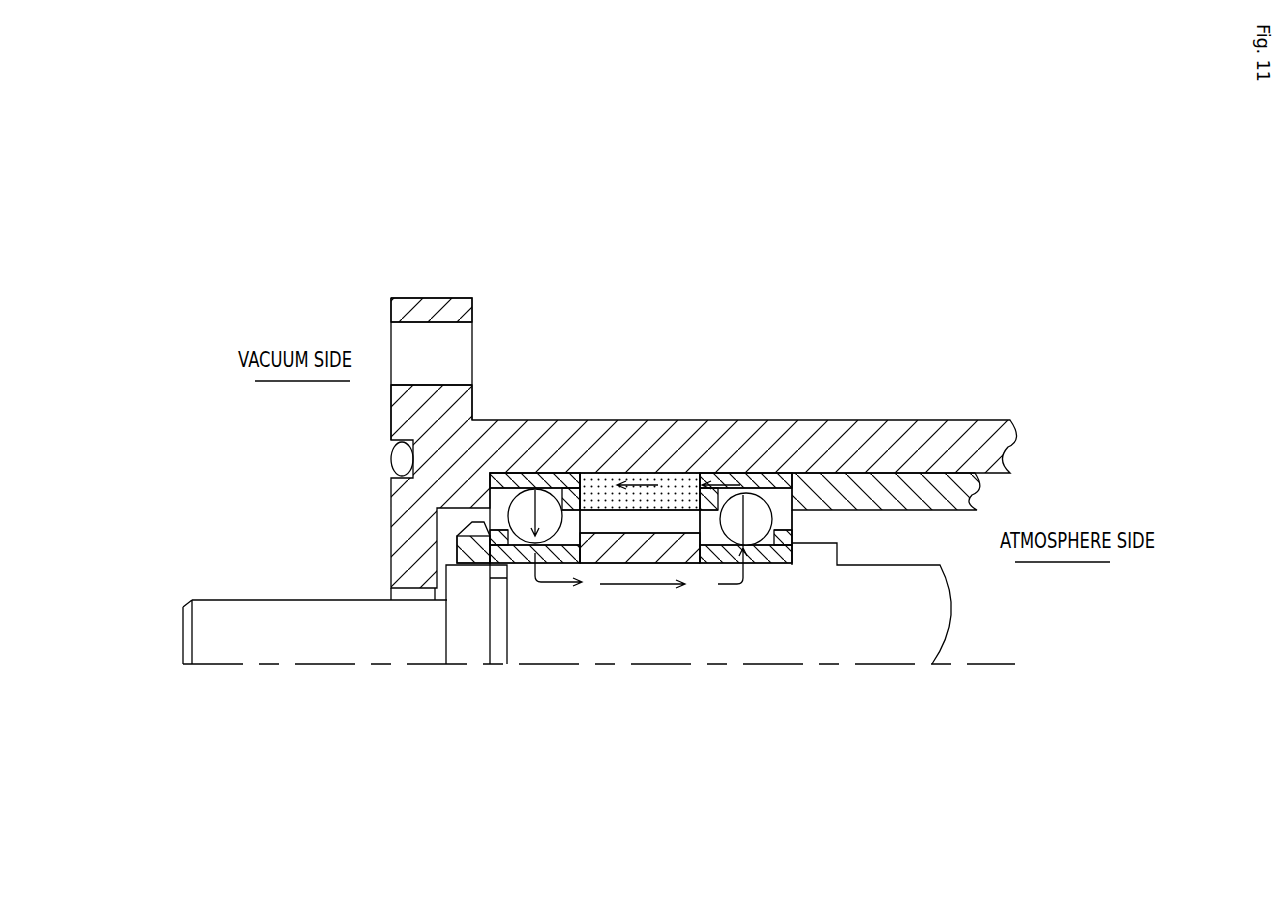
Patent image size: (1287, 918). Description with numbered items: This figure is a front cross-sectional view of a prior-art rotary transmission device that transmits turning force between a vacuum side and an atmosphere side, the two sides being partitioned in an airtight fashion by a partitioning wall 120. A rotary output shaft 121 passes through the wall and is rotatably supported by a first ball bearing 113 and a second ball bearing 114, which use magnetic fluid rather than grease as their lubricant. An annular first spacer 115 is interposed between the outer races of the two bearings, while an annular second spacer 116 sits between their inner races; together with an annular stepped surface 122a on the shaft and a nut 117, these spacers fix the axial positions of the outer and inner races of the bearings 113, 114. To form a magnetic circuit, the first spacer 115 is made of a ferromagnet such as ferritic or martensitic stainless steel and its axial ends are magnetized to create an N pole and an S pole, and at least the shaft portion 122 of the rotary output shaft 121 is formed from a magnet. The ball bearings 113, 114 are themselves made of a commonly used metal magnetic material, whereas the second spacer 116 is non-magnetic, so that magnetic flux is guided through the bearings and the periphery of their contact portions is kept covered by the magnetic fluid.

The first ball bearing 113 is at (510, 495).
The second ball bearing 114 is at (760, 490).
The first spacer 115 is at (640, 475).
The second spacer 116 is at (680, 562).
The nut 117 is at (457, 540).
The partitioning wall 120 is at (442, 298).
The rotary output shaft 121 is at (288, 613).
The shaft portion 122 is at (620, 607).
The stepped surface 122a is at (790, 537).